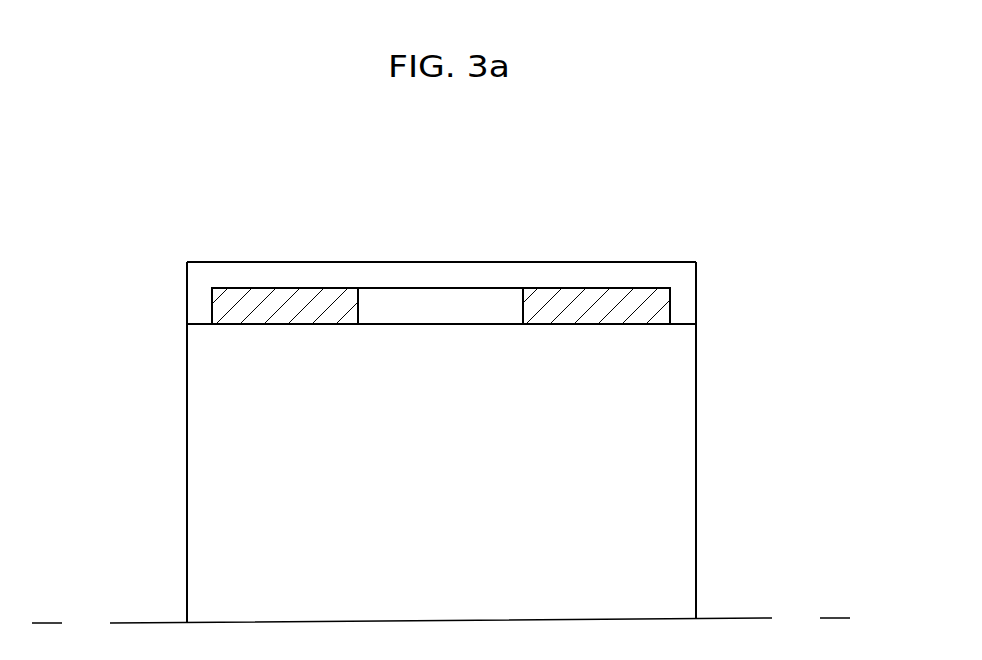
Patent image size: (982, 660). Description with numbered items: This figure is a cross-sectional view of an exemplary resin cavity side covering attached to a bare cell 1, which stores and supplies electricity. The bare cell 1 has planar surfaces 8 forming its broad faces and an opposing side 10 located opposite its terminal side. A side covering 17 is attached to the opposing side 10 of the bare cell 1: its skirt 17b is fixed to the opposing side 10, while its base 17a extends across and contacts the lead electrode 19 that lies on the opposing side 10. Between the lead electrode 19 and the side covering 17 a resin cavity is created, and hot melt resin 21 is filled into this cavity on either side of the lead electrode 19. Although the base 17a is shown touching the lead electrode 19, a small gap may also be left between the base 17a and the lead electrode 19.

The bare cell 1 is at (462, 393).
The planar surfaces 8 is at (187, 471).
The opposing side 10 is at (405, 266).
The side covering 17 is at (505, 244).
The base 17a is at (638, 266).
The skirt 17b is at (687, 311).
The lead electrode 19 is at (436, 305).
The hot melt resin 21 is at (274, 302).